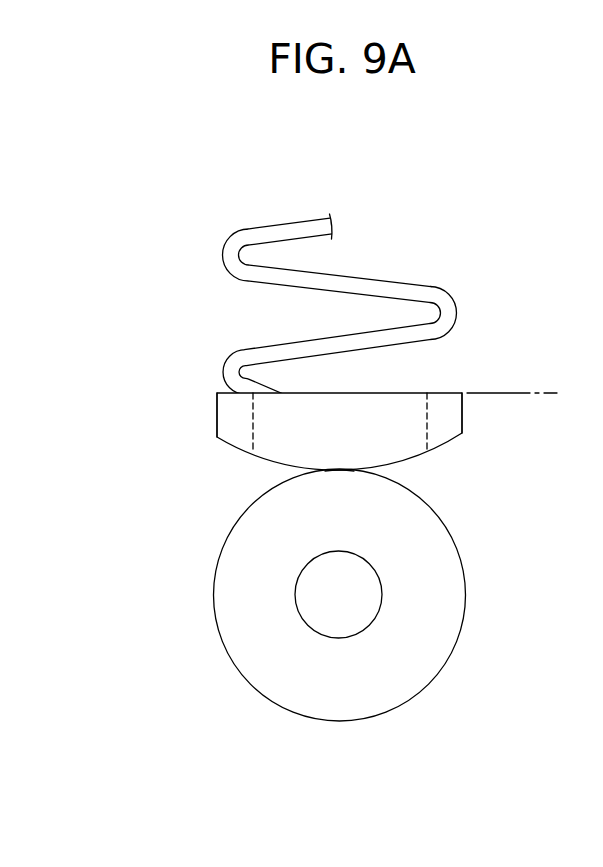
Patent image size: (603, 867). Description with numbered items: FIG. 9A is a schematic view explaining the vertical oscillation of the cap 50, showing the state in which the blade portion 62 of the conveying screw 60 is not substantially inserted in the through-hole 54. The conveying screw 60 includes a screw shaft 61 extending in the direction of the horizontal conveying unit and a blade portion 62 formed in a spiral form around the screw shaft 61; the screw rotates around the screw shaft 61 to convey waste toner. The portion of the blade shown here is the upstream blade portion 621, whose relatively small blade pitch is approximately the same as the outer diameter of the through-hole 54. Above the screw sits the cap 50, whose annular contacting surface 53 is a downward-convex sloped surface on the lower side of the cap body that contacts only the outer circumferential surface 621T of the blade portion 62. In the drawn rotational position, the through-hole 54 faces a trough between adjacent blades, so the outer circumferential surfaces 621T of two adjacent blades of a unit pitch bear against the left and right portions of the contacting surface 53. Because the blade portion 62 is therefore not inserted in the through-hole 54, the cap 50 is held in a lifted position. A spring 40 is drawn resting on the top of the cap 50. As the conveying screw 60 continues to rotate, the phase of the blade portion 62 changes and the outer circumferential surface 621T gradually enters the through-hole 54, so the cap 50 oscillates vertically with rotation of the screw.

The coil spring 40 is at (441, 285).
The cap 50 is at (356, 448).
The contacting surface 53 is at (232, 443).
The through-hole 54 is at (392, 448).
The outer circumferential surface 621T is at (339, 470).
The conveying screw 60 is at (407, 610).
The screw shaft 61 is at (370, 593).
The blade portion 62 is at (407, 595).
The upstream blade portion 621 is at (458, 641).